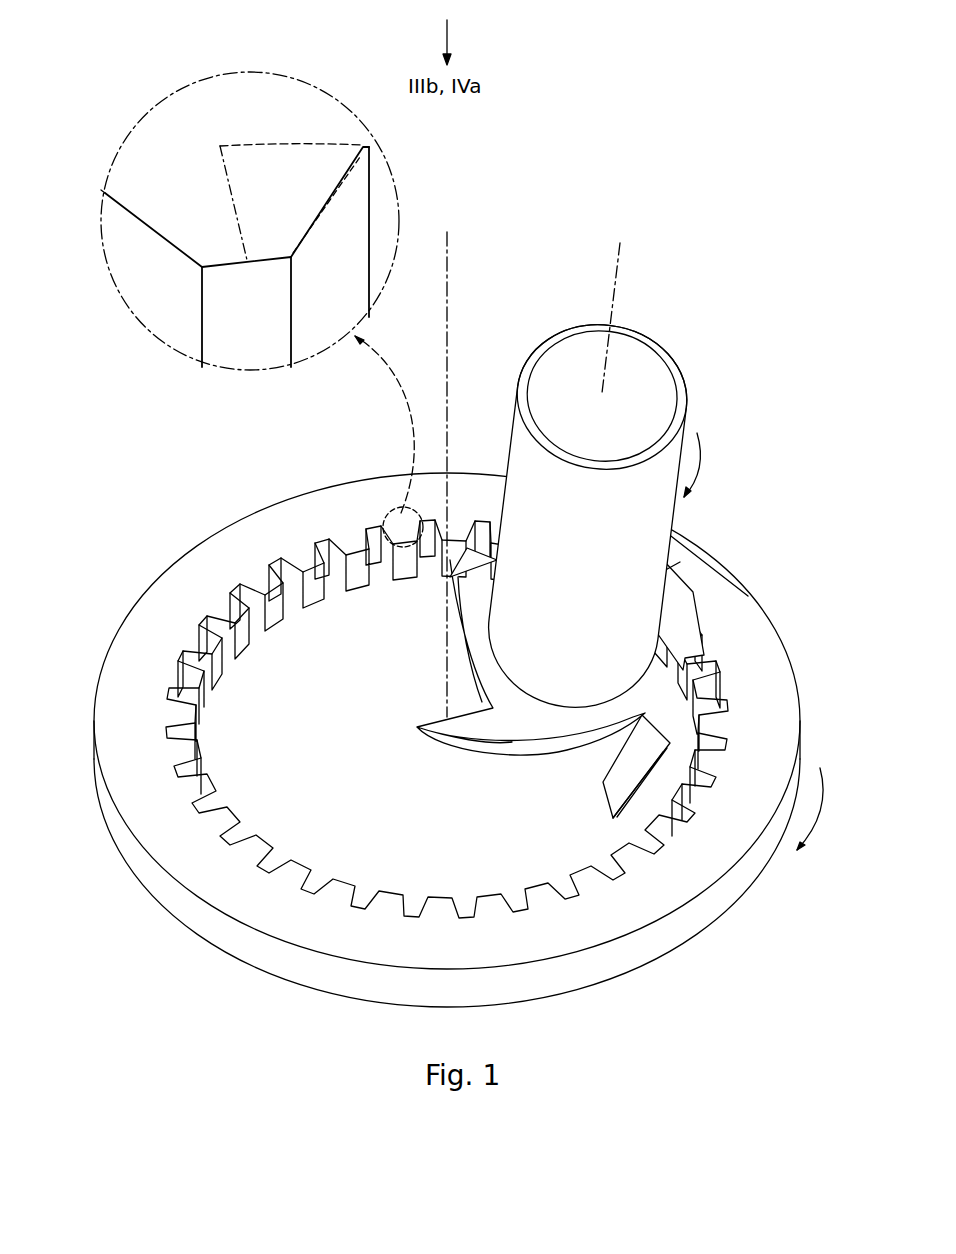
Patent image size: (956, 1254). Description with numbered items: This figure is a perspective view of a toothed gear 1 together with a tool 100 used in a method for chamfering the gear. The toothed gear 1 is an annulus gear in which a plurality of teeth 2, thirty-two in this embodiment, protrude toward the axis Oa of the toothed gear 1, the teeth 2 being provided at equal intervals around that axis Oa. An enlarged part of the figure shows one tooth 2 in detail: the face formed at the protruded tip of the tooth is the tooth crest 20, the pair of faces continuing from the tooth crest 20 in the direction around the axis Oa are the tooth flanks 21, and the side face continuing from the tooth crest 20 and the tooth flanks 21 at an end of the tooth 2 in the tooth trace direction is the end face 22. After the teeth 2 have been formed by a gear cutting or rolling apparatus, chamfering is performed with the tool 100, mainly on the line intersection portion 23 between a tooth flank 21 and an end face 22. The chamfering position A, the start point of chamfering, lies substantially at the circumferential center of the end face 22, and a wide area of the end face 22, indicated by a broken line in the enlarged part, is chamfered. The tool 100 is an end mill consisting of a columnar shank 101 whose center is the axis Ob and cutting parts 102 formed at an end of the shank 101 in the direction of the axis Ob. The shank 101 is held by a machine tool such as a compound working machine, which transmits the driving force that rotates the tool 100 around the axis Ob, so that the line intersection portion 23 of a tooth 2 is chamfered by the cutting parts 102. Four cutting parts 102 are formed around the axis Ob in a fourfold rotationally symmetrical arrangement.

The toothed gear 1 is at (158, 500).
The tooth 2 is at (313, 583).
The tooth crest 20 is at (247, 323).
The tooth flank 21 is at (152, 280).
The end face 22 is at (180, 182).
The line intersection portion 23 is at (371, 147).
The tool 100 is at (569, 501).
The shank 101 is at (640, 387).
The cutting part 102 is at (490, 563).
The chamfering position A is at (220, 146).
The axis of the toothed gear Oa is at (447, 245).
The axis of the shank Ob is at (620, 243).